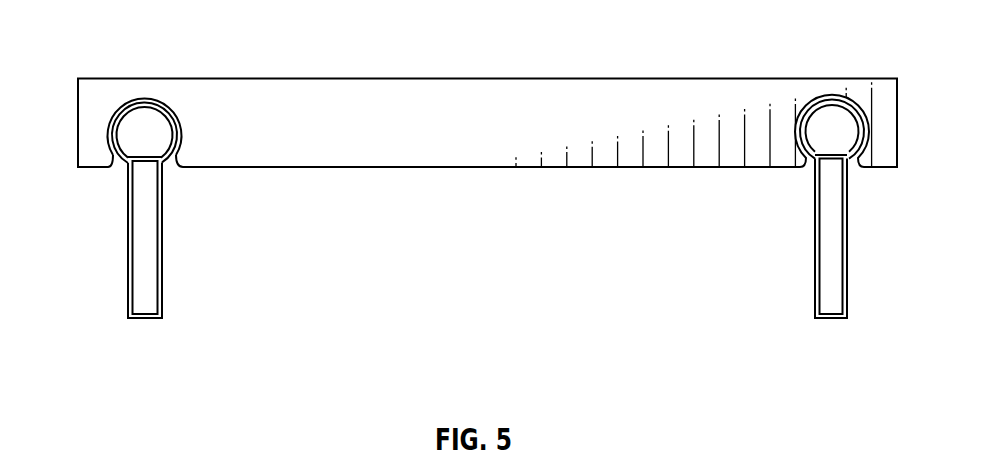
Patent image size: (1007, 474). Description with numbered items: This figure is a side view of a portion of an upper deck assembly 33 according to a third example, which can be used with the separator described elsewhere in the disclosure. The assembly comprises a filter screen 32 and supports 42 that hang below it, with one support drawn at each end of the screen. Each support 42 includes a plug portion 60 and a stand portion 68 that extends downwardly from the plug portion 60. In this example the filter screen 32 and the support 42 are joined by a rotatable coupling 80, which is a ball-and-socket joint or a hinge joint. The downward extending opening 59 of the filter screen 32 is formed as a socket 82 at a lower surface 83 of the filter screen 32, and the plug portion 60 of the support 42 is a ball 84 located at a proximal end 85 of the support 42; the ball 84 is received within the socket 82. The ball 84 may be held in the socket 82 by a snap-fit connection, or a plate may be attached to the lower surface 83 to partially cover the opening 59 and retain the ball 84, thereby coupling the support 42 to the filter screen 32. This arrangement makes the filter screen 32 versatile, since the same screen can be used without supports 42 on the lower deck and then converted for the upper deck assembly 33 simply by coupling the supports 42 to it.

The filter screen 32 is at (100, 102).
The upper deck assembly 33 is at (533, 44).
The support 42 is at (148, 280).
The downward extending opening 59 is at (118, 168).
The plug portion 60 is at (845, 132).
The stand portion 68 is at (832, 300).
The rotatable coupling 80 is at (175, 125).
The socket 82 is at (143, 97).
The lower surface 83 is at (287, 169).
The ball 84 is at (140, 117).
The proximal end 85 is at (155, 130).